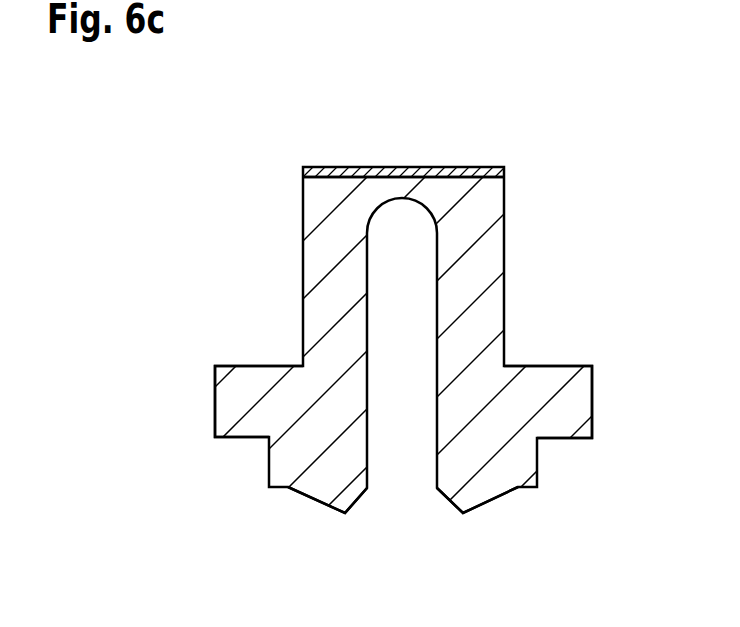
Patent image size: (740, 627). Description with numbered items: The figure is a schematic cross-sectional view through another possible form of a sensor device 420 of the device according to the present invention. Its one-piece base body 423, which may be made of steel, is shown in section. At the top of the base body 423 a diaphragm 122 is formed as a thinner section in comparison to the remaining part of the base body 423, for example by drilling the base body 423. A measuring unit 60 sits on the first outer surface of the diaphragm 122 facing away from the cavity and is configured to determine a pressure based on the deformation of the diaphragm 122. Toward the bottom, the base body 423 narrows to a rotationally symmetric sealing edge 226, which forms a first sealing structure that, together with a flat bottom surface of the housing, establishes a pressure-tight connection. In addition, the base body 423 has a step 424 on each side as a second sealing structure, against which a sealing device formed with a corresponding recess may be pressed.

The sensor device 420 is at (323, 193).
The base body 423 is at (478, 260).
The step 424 is at (263, 365).
The sealing edge 226 is at (345, 514).
The diaphragm 122 is at (412, 187).
The measuring unit 60 is at (481, 177).